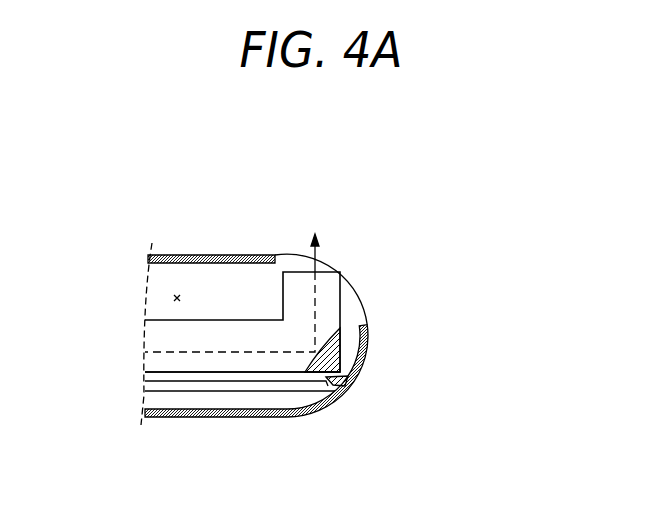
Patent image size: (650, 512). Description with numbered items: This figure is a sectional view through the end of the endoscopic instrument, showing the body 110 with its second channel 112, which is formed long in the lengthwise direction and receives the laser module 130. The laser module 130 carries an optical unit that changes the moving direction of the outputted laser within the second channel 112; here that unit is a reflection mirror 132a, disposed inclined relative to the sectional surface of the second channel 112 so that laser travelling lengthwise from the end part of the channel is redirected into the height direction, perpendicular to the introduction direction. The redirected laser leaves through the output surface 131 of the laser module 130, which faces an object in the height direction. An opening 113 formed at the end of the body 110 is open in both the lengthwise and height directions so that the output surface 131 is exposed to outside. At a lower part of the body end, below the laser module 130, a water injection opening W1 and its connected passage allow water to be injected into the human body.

The body 110 is at (182, 417).
The second channel 112 is at (173, 297).
The opening 113 is at (290, 255).
The laser module 130 is at (252, 371).
The output surface 131 is at (333, 272).
The reflection mirror 132a is at (336, 338).
The water injection opening W1 is at (348, 388).